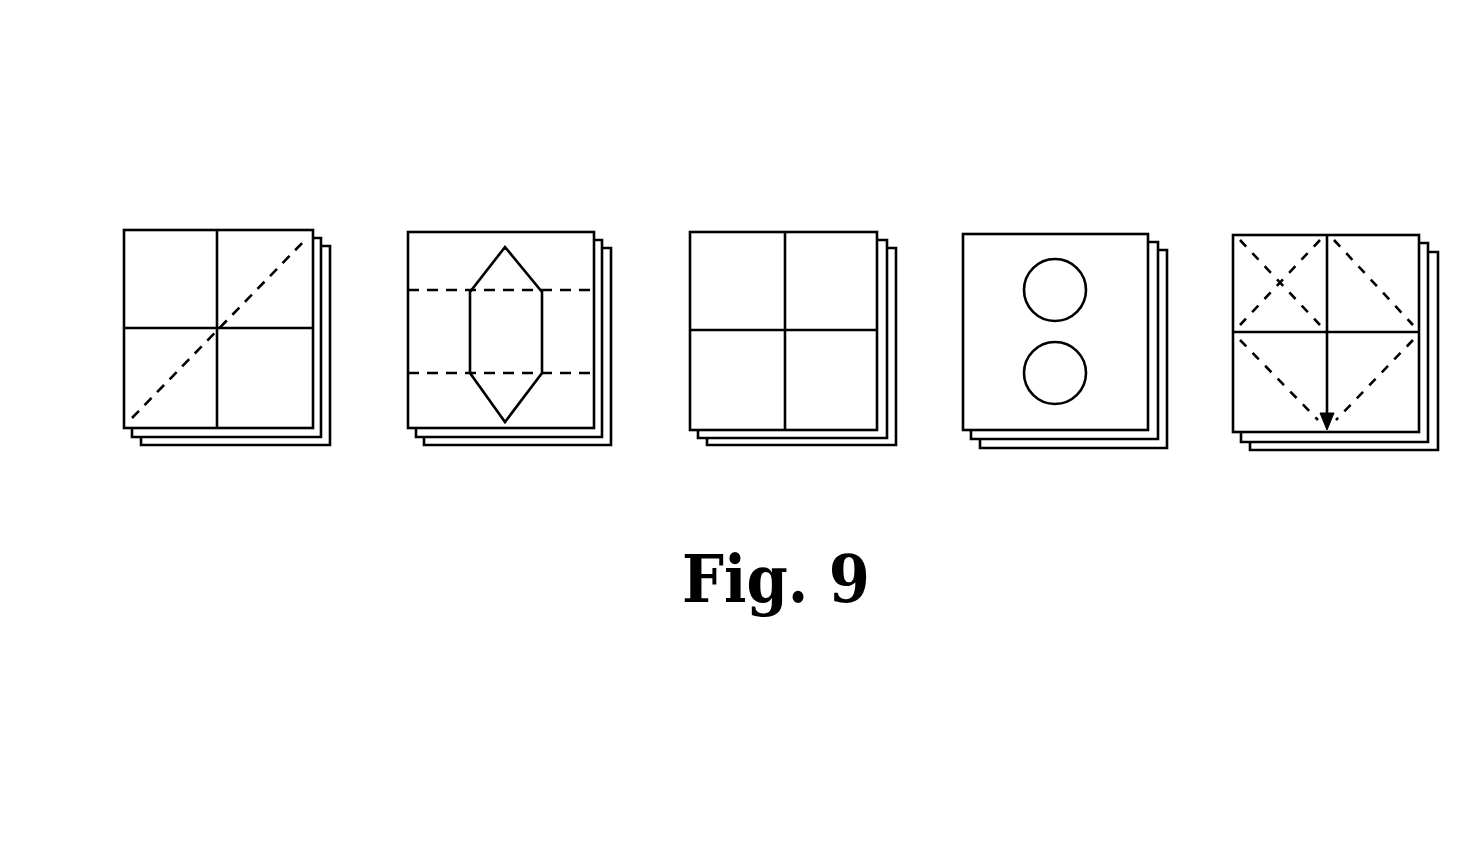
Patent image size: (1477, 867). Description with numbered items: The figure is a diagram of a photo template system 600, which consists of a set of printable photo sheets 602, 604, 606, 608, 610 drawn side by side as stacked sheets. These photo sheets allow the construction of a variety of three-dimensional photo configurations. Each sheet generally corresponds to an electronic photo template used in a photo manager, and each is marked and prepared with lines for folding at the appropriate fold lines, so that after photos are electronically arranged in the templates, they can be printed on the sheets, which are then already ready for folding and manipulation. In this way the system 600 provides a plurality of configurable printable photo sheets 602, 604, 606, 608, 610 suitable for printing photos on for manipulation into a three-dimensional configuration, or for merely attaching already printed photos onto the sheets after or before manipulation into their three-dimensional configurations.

The system 600 is at (779, 156).
The printable photo sheet 602 is at (246, 230).
The printable photo sheet 604 is at (530, 232).
The printable photo sheet 606 is at (813, 232).
The printable photo sheet 608 is at (1083, 234).
The printable photo sheet 610 is at (1353, 235).